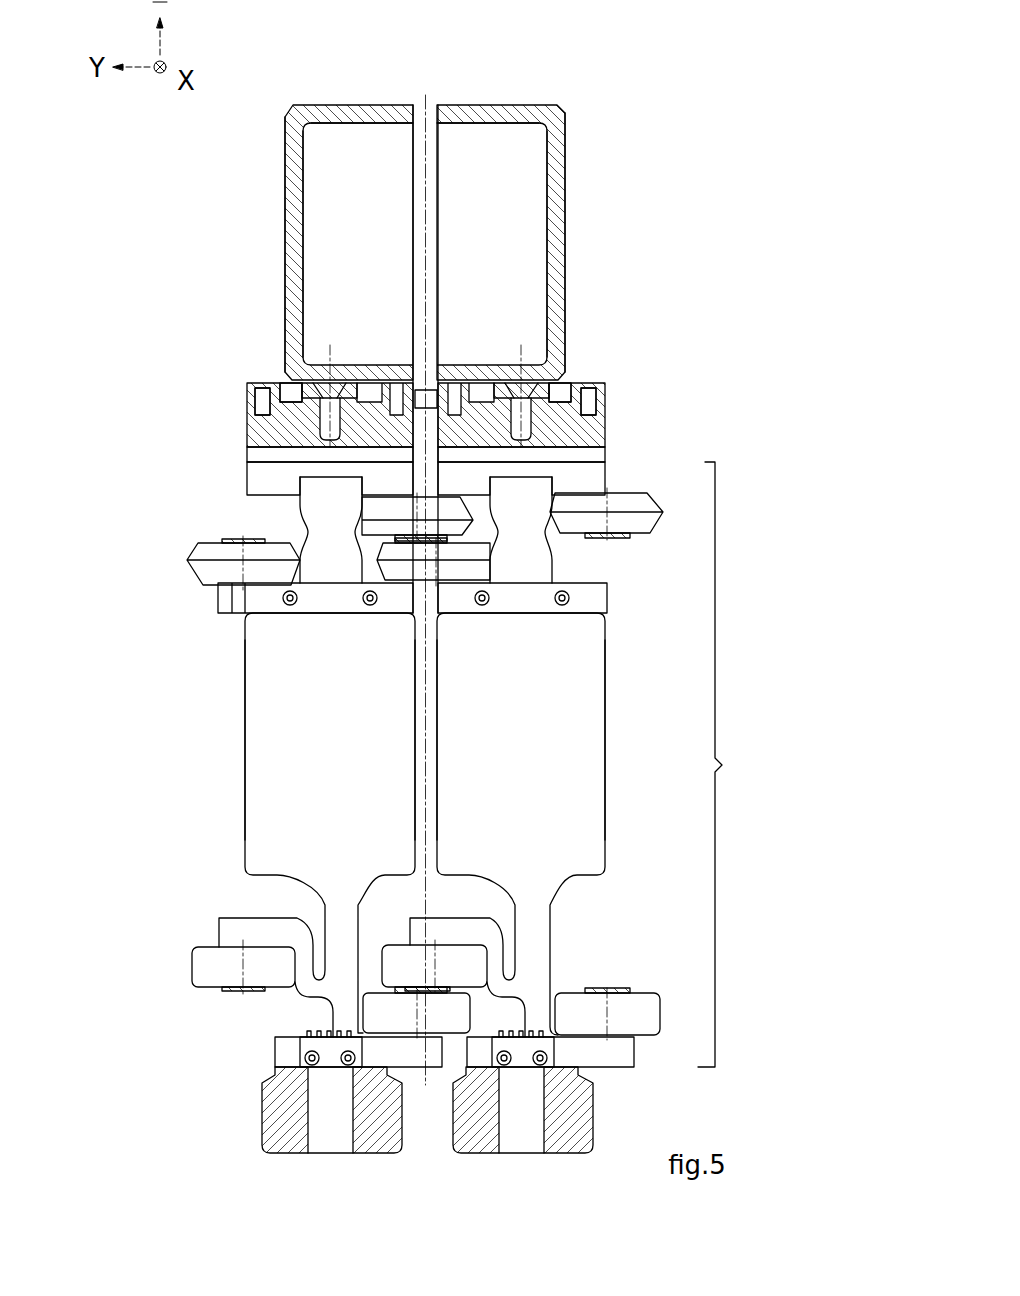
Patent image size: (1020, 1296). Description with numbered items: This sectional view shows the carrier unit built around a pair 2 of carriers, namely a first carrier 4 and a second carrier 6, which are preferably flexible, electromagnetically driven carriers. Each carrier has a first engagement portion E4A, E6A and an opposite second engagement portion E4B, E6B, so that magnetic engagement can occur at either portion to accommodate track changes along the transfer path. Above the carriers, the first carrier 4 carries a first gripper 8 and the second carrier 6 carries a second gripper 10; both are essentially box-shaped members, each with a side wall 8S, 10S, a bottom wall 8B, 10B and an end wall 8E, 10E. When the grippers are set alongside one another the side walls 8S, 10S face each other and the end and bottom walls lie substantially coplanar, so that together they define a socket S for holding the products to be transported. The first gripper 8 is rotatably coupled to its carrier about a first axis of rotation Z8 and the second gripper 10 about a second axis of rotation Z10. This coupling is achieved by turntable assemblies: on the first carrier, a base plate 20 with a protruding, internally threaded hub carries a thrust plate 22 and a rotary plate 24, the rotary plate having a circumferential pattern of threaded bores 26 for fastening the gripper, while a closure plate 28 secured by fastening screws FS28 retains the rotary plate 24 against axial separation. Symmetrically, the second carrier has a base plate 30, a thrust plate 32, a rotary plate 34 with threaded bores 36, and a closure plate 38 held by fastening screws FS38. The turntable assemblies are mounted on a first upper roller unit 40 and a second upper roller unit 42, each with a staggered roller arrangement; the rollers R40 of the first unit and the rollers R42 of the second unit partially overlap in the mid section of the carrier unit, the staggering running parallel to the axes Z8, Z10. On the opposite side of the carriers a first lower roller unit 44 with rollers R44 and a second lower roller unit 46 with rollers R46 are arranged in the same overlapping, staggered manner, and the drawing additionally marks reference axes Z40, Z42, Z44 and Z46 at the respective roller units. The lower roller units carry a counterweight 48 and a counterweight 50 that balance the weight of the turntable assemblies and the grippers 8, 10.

The pair of carriers 2 is at (731, 764).
The first carrier 4 is at (262, 762).
The second carrier 6 is at (588, 780).
The first gripper 8 is at (336, 104).
The side wall 8S is at (304, 152).
The end wall 8E is at (355, 139).
The bottom wall 8B is at (296, 265).
The second gripper 10 is at (493, 104).
The side wall 10S is at (547, 165).
The end wall 10E is at (512, 138).
The bottom wall 10B is at (556, 295).
The socket S is at (394, 136).
The base plate 20 is at (247, 440).
The thrust plate 22 is at (247, 425).
The rotary plate 24 is at (247, 402).
The threaded bores 26 is at (262, 394).
The closure plate 28 is at (296, 390).
The fastening screws FS28 is at (383, 362).
The first axis of rotation Z8 is at (329, 352).
The base plate 30 is at (605, 440).
The thrust plate 32 is at (605, 425).
The rotary plate 34 is at (605, 400).
The threaded bores 36 is at (590, 397).
The closure plate 38 is at (558, 393).
The fastening screws FS38 is at (485, 362).
The second axis of rotation Z10 is at (520, 352).
The first upper roller unit 40 is at (162, 538).
The center axis of contact flag 40 Z40 is at (417, 502).
The rollers R40 is at (200, 566).
The second upper roller unit 42 is at (712, 514).
The center axis of contact flag 42 Z42 is at (607, 506).
The rollers R42 is at (660, 522).
The first engagement portion E4A is at (310, 697).
The second engagement portion E4B is at (272, 820).
The first engagement portion E6A is at (495, 697).
The second engagement portion E6B is at (568, 808).
The first lower roller unit 44 is at (160, 979).
The center axis of contact flag 44 Z44 is at (243, 963).
The rollers R44 is at (208, 977).
The second lower roller unit 46 is at (712, 1027).
The center axis of contact flag 46 Z46 is at (435, 957).
The rollers R46 is at (473, 970).
The counterweight 48 is at (285, 1133).
The counterweight 50 is at (478, 1133).